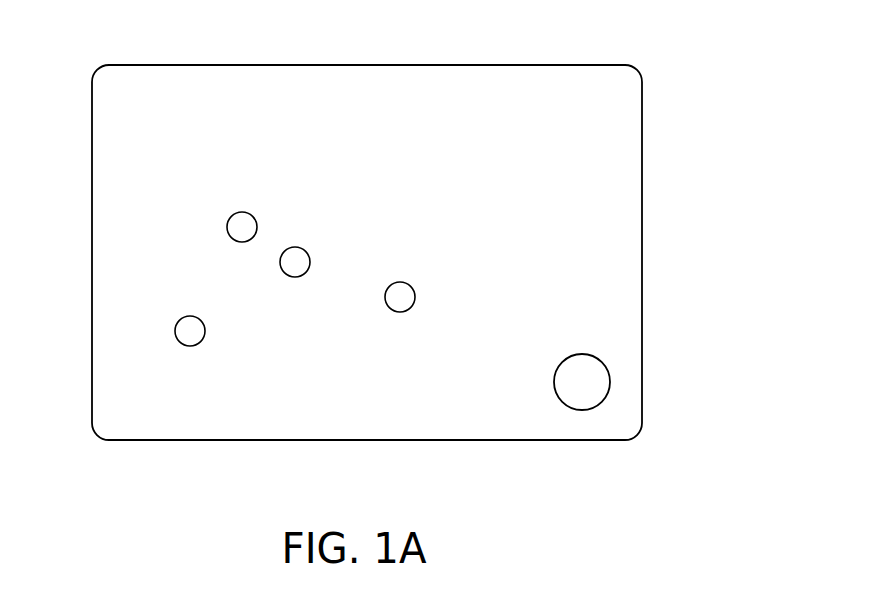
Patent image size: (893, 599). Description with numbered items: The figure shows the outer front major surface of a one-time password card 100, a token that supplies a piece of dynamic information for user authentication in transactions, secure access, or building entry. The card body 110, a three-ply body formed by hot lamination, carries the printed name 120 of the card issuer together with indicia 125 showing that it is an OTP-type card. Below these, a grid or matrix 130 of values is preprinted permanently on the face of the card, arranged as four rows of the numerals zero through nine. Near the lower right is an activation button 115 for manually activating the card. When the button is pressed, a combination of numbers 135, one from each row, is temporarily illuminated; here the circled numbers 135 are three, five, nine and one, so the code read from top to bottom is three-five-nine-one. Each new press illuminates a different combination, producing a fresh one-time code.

The one-time password (OTP) card 100 is at (664, 76).
The card body 110 is at (632, 205).
The activation button 115 is at (580, 390).
The name of an issuer 120 is at (350, 90).
The indicia 125 is at (585, 137).
The grid, array or matrix of values 130 is at (163, 212).
The numbers 135 is at (243, 211).